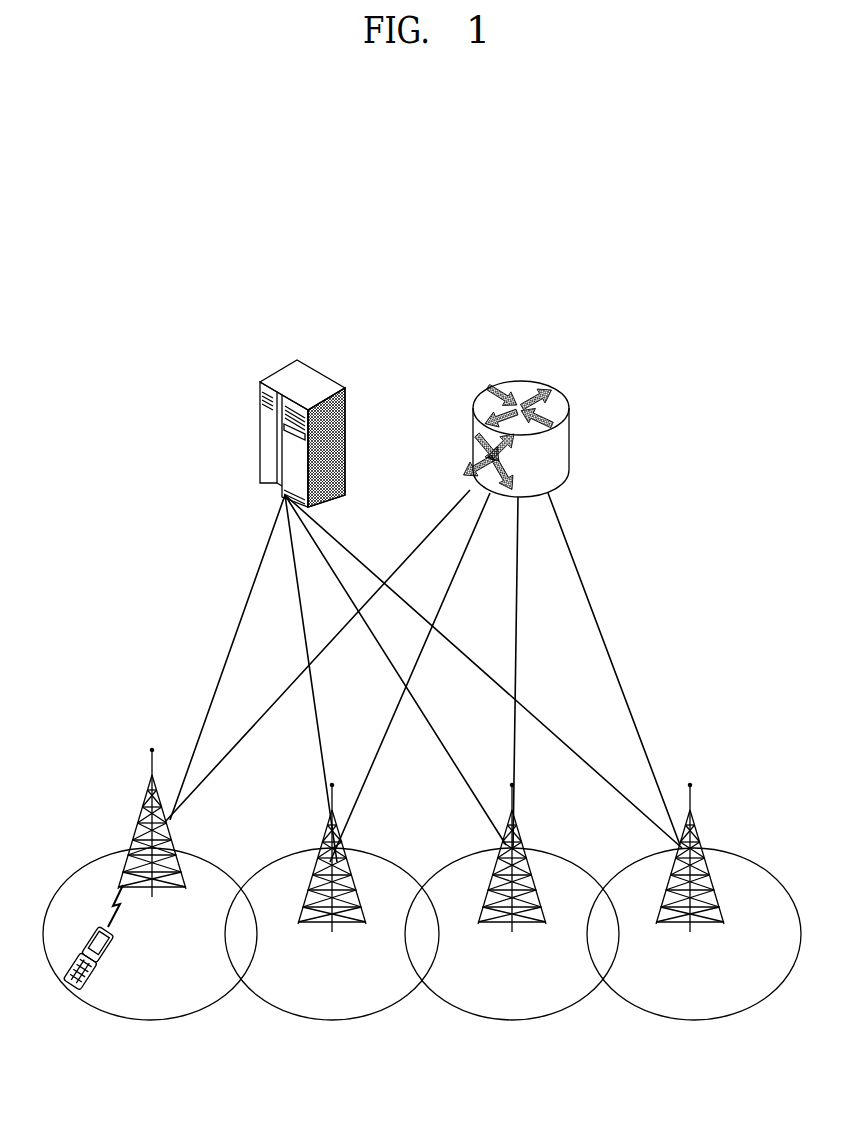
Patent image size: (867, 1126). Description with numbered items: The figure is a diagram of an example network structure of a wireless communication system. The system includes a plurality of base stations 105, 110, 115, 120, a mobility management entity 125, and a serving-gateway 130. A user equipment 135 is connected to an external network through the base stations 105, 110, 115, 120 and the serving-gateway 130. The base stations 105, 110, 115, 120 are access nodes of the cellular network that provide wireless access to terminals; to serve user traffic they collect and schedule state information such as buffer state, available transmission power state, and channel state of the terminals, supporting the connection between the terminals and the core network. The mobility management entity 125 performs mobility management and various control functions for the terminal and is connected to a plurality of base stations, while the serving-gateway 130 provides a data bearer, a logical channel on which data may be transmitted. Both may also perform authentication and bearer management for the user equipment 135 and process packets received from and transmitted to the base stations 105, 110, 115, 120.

The base station 105 is at (142, 802).
The base station 110 is at (325, 830).
The base station 115 is at (520, 830).
The base station 120 is at (700, 825).
The mobility management entity 125 is at (287, 380).
The serving-gateway 130 is at (517, 385).
The user equipment 135 is at (107, 954).